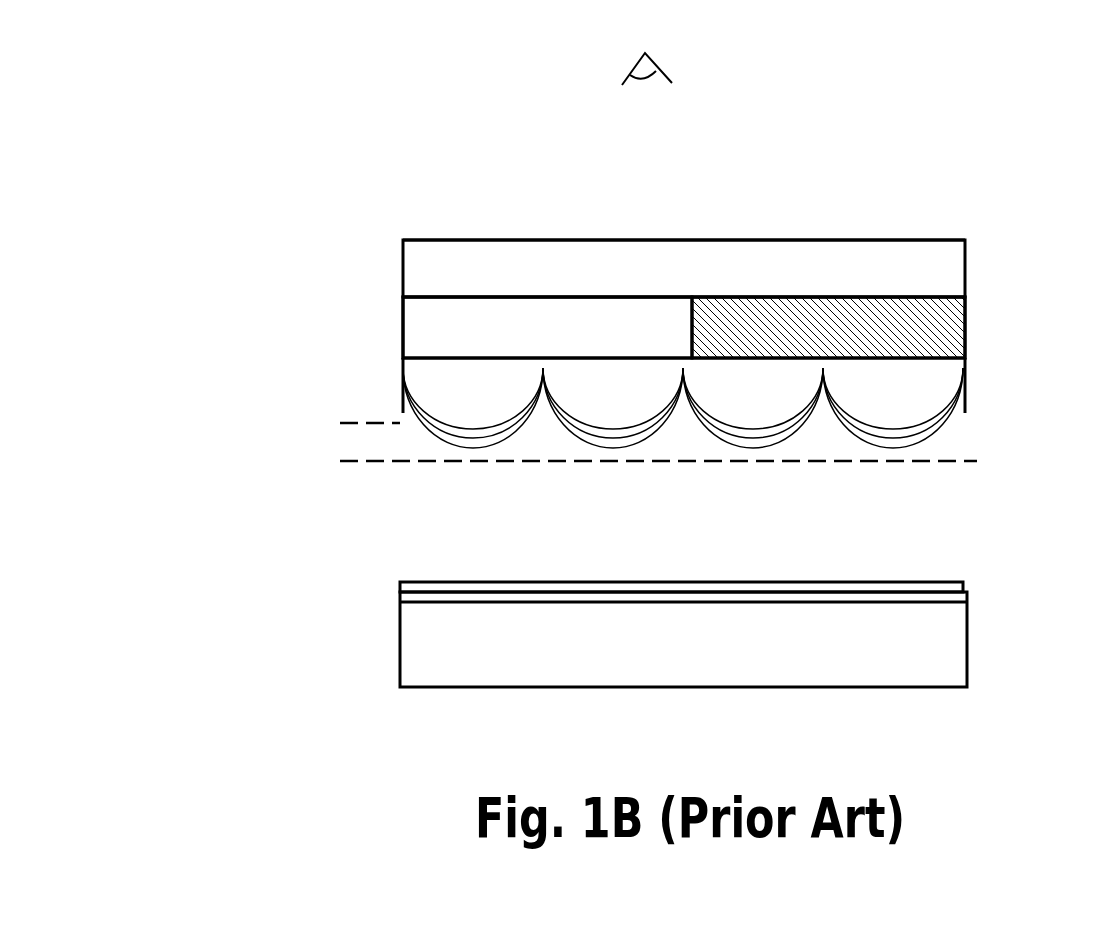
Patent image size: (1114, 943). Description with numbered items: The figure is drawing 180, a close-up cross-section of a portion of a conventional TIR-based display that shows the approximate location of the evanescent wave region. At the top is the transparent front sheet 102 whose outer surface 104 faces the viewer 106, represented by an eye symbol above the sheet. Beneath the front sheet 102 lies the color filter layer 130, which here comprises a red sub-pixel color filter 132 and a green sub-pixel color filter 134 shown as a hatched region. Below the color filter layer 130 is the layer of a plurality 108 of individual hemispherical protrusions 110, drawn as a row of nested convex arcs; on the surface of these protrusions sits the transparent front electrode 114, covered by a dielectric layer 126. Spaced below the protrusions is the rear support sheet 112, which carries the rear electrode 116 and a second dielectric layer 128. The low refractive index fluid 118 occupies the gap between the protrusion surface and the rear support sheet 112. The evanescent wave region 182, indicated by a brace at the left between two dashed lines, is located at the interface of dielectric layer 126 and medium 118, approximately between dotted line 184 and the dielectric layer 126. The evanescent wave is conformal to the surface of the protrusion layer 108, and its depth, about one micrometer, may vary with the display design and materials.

The transparent front sheet 102 is at (690, 278).
The outer surface 104 is at (470, 239).
The viewer 106 is at (653, 63).
The layer of a plurality of hemispherical protrusions 108 is at (982, 367).
The individual hemispherical protrusion 110 is at (648, 400).
The rear support sheet 112 is at (487, 649).
The transparent front electrode 114 is at (492, 428).
The rear electrode 116 is at (673, 603).
The low refractive index fluid 118 is at (690, 521).
The dielectric layer 126 is at (760, 447).
The dielectric layer 128 is at (867, 581).
The color filter layer 130 is at (982, 295).
The red sub-pixel color filter 132 is at (563, 341).
The green sub-pixel color filter 134 is at (838, 341).
The drawing 180 is at (903, 204).
The evanescent wave region 182 is at (322, 423).
The dotted line 184 is at (425, 464).